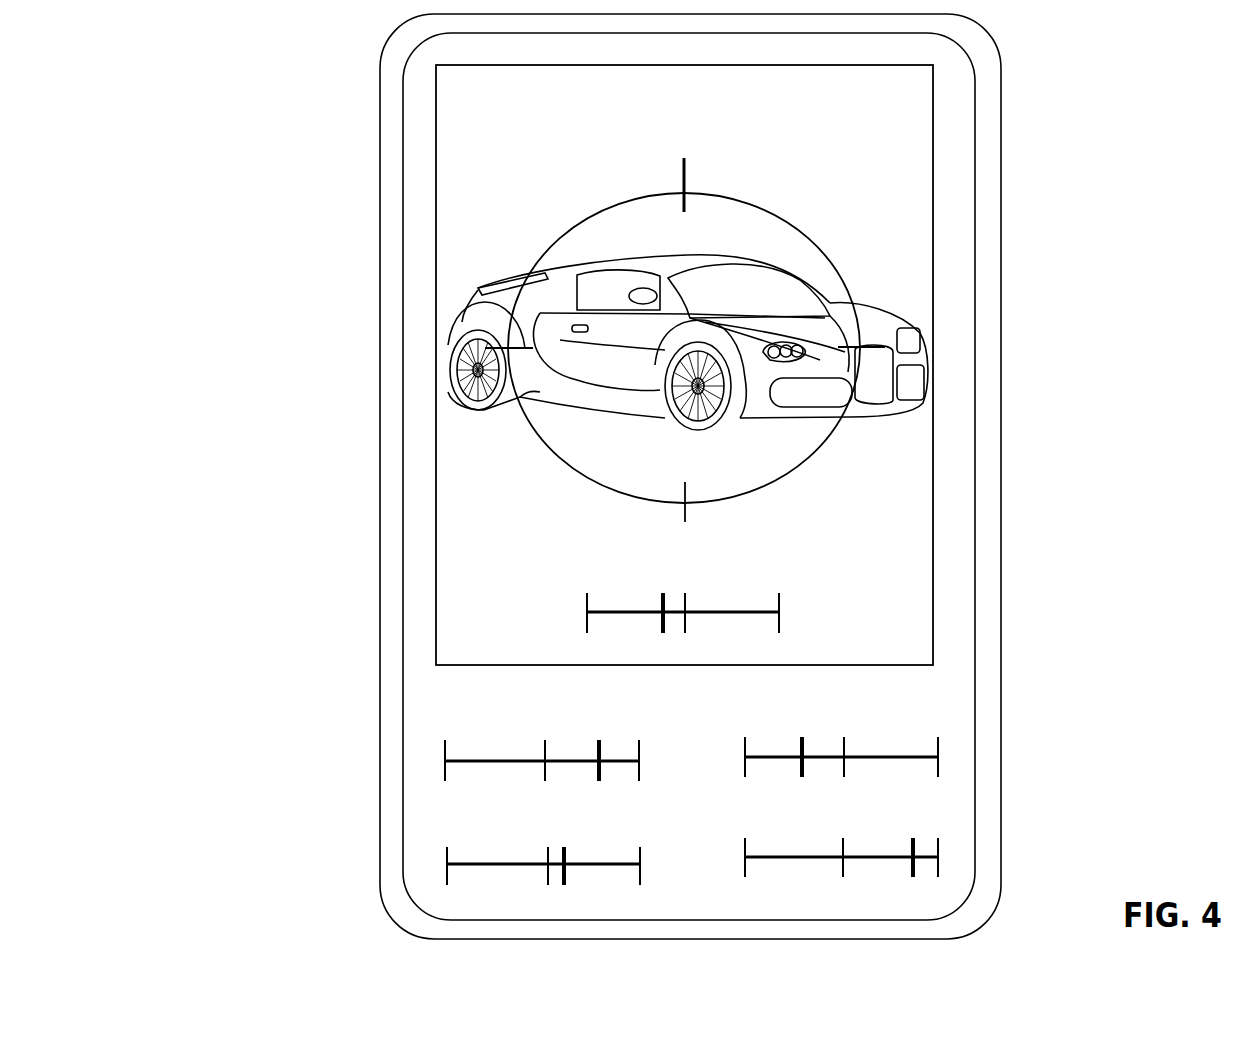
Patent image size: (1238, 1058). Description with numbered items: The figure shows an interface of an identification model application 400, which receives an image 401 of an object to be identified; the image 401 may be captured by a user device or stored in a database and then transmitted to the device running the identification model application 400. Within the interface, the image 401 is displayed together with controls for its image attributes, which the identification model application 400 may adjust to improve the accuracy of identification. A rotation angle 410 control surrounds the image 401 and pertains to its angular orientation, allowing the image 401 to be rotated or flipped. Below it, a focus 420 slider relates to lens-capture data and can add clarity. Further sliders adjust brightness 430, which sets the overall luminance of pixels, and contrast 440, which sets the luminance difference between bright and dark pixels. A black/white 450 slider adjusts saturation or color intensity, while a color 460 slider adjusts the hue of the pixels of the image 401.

The identification model application 400 is at (190, 46).
The image 401 is at (885, 418).
The rotation angle 410 is at (685, 320).
The focus 420 is at (683, 596).
The brightness 430 is at (544, 745).
The contrast 440 is at (543, 849).
The black/white (saturation) 450 is at (846, 742).
The color 460 is at (841, 842).